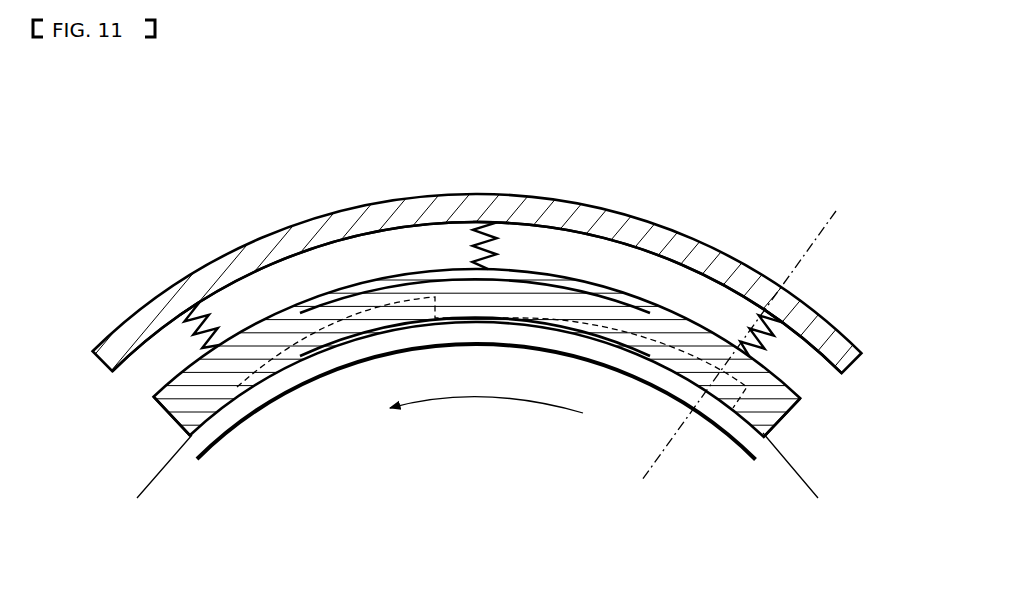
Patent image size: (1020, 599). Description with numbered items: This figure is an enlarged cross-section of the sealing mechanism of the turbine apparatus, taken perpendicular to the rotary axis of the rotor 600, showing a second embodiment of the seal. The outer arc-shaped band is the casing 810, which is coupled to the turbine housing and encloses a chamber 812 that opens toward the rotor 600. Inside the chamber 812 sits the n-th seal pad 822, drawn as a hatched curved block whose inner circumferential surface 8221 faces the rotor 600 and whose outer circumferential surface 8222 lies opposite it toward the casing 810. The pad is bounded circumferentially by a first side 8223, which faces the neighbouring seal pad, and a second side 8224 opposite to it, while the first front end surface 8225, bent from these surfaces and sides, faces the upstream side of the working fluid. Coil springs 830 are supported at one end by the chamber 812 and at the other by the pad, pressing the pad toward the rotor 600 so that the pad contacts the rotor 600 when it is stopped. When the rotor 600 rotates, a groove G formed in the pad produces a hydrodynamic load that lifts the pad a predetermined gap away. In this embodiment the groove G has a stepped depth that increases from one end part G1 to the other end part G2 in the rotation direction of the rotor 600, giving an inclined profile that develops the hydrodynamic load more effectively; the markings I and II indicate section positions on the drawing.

The casing 810 is at (118, 318).
The chamber 812 is at (163, 347).
The n-th seal pad 822 is at (370, 262).
The outer circumferential surface 8222 is at (430, 269).
The inner circumferential surface 8221 is at (478, 324).
The second side 8224 is at (170, 417).
The first side 8223 is at (786, 418).
The first front end surface 8225 is at (628, 310).
The spring 830 is at (197, 298).
The rotor 600 is at (250, 422).
The groove G is at (314, 350).
The one end part of the groove G1 is at (512, 322).
The other end part of the groove G2 is at (742, 392).
The first section line I is at (824, 242).
The second section line II is at (172, 471).